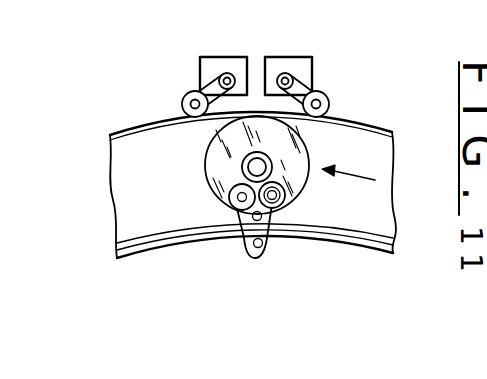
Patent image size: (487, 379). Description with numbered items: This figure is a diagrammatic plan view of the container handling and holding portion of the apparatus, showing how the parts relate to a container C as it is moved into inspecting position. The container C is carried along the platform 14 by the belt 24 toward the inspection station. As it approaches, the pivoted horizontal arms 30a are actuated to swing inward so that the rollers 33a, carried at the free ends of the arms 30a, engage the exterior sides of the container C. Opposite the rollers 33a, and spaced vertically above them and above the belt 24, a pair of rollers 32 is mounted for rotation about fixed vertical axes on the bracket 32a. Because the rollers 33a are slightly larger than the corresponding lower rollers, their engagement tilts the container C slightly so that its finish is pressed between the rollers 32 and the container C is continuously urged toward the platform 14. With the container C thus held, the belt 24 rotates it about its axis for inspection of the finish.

The platform 14 is at (124, 178).
The belt 24 is at (330, 224).
The container C is at (219, 201).
The pivoted horizontal arm 30a is at (217, 76).
The roller 32 is at (229, 211).
The bracket 32a is at (258, 258).
The roller 33a is at (187, 97).